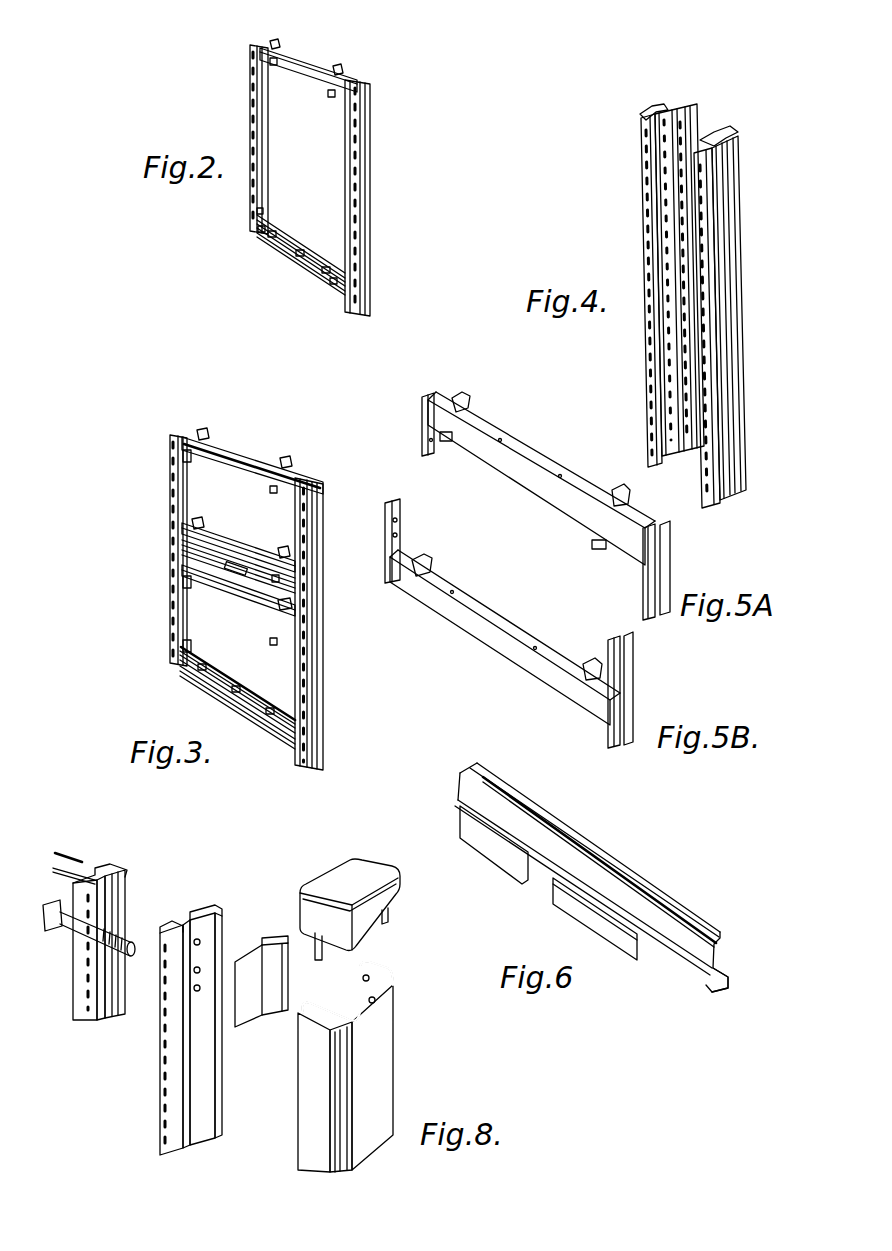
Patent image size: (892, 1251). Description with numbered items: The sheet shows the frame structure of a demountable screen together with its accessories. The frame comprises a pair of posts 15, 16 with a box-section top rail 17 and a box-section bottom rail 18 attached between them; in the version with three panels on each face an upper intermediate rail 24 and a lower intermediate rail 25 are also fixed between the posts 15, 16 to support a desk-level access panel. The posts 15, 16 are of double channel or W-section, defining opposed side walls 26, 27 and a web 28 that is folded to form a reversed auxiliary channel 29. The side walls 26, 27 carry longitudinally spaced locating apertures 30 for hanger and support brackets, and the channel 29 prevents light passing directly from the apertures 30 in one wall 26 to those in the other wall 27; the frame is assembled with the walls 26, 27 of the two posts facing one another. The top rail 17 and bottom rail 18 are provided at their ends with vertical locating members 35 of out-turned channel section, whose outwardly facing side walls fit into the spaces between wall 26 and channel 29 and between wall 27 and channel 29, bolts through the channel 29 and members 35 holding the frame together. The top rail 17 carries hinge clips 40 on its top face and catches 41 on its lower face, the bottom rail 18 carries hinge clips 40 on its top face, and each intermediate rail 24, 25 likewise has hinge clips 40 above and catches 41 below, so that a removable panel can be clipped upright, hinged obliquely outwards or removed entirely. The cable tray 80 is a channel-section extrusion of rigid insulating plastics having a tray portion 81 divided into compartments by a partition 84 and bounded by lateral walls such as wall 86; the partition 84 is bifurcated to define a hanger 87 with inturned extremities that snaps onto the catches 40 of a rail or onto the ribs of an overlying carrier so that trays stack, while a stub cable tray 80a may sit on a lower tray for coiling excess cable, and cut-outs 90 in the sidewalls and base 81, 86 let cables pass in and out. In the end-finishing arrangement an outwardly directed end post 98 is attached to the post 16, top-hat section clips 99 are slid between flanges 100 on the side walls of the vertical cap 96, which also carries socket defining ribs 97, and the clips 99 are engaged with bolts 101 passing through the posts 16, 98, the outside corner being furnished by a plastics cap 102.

In FIG. 2, the post 15 is at (250, 102).
In FIG. 4, the post 15 is at (645, 248).
In FIG. 3, the post 15 is at (170, 498).
In FIG. 2, the post 16 is at (370, 132).
In FIG. 4, the post 16 is at (742, 250).
In FIG. 3, the post 16 is at (314, 518).
In FIG. 8, the post 16 is at (126, 890).
In FIG. 2, the top rail 17 is at (300, 58).
In FIG. 3, the top rail 17 is at (240, 452).
In FIG. 5A, the top rail 17 is at (532, 456).
In FIG. 8, the top rail 17 is at (85, 860).
In FIG. 2, the bottom rail 18 is at (335, 294).
In FIG. 3, the bottom rail 18 is at (284, 745).
In FIG. 5B, the bottom rail 18 is at (515, 666).
In FIG. 3, the upper intermediate rail 24 is at (240, 548).
In FIG. 3, the lower intermediate rail 25 is at (232, 604).
In FIG. 4, the side wall 26 is at (694, 134).
In FIG. 4, the side wall 27 is at (644, 186).
In FIG. 4, the web 28 is at (644, 112).
In FIG. 4, the reversed auxiliary channel 29 is at (650, 108).
In FIG. 4, the locating apertures 30 is at (668, 372).
In FIG. 2, the vertical locating member 35 is at (262, 210).
In FIG. 3, the vertical locating member 35 is at (185, 458).
In FIG. 5A, the vertical locating member 35 is at (422, 420).
In FIG. 5B, the vertical locating member 35 is at (402, 528).
In FIG. 2, the hinge clip 40 is at (280, 41).
In FIG. 3, the hinge clip 40 is at (288, 458).
In FIG. 5A, the hinge clip 40 is at (462, 396).
In FIG. 5B, the hinge clip 40 is at (432, 560).
In FIG. 2, the catch 41 is at (276, 66).
In FIG. 3, the catch 41 is at (282, 584).
In FIG. 5A, the catch 41 is at (450, 444).
In FIG. 2, the cable tray 80 is at (275, 248).
In FIG. 3, the cable tray 80 is at (206, 680).
In FIG. 6, the cable tray 80 is at (727, 942).
In FIG. 3, the stub cable tray 80a is at (220, 582).
In FIG. 6, the tray portion 81 is at (645, 975).
In FIG. 6, the partition 84 is at (677, 925).
In FIG. 6, the lateral wall 86 is at (590, 930).
In FIG. 6, the hanger 87 is at (597, 850).
In FIG. 6, the cut-outs 90 is at (460, 818).
In FIG. 8, the vertical cap 96 is at (385, 1098).
In FIG. 8, the socket defining ribs 97 is at (378, 1005).
In FIG. 8, the end post 98 is at (205, 910).
In FIG. 8, the top-hat section clip 99 is at (250, 945).
In FIG. 8, the flanges 100 is at (365, 962).
In FIG. 8, the bolt 101 is at (65, 935).
In FIG. 8, the plastics cap 102 is at (348, 872).